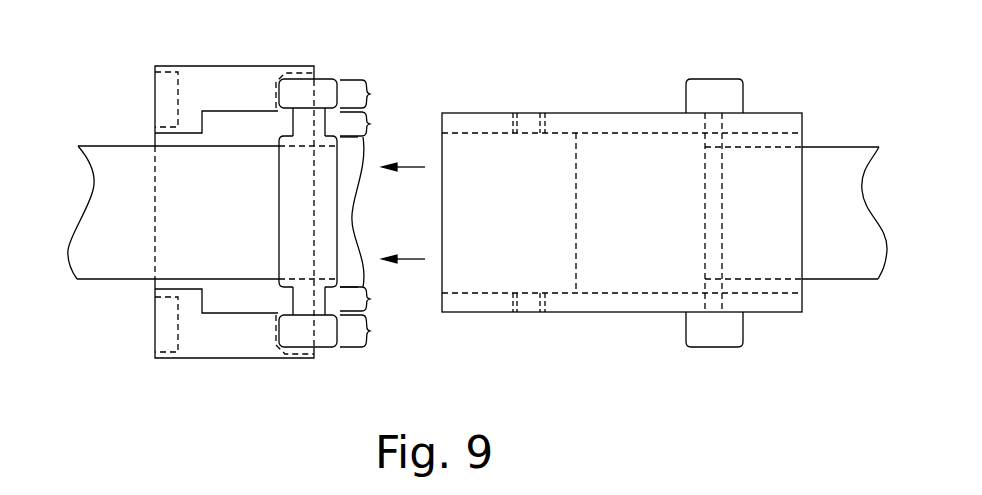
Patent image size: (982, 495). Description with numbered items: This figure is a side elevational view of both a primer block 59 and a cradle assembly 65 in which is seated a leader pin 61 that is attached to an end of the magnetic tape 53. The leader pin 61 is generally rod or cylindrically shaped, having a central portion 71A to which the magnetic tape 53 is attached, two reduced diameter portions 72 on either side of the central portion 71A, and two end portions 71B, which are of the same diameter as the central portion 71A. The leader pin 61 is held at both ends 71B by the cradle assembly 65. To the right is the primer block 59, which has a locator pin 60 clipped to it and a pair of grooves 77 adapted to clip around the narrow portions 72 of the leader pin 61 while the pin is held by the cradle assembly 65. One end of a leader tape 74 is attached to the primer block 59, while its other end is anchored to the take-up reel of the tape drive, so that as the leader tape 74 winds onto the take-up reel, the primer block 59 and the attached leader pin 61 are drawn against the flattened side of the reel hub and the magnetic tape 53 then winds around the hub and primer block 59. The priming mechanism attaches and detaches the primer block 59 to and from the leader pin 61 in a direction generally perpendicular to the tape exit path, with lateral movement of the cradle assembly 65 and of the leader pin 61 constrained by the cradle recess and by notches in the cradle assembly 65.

The magnetic tape 53 is at (117, 255).
The primer block 59 is at (612, 302).
The locator pin 60 is at (723, 95).
The leader pin 61 is at (346, 197).
The cradle assembly 65 is at (235, 340).
The central portion 71A is at (346, 211).
The end portions 71B is at (346, 213).
The reduced diameter portions 72 is at (346, 211).
The leader tape 74 is at (828, 172).
The grooves 77 is at (538, 109).